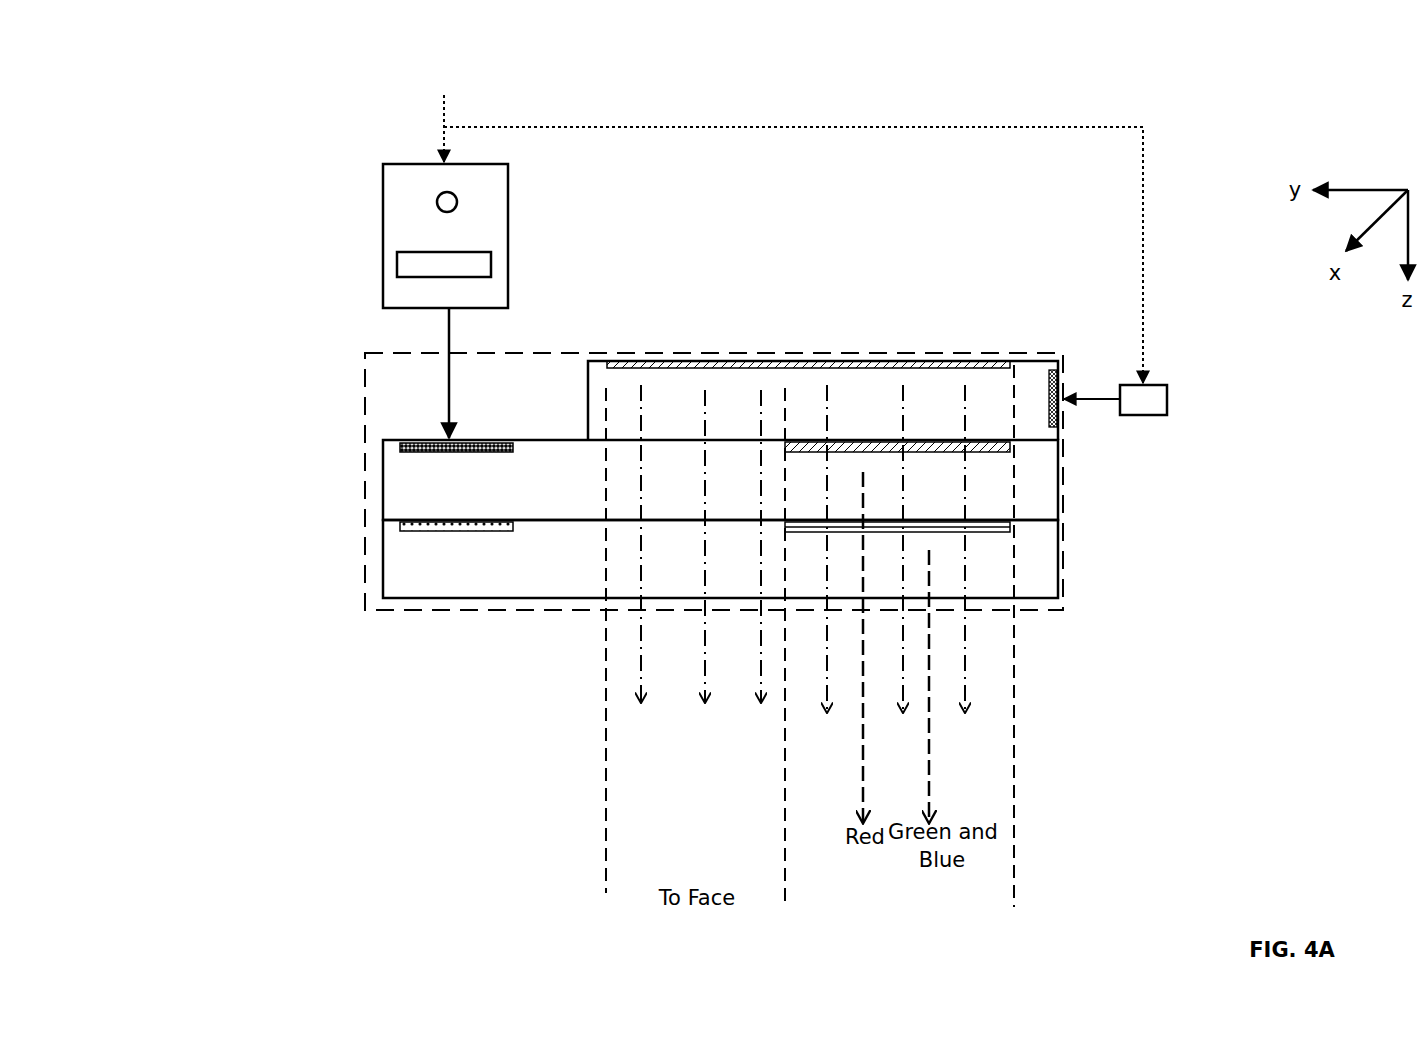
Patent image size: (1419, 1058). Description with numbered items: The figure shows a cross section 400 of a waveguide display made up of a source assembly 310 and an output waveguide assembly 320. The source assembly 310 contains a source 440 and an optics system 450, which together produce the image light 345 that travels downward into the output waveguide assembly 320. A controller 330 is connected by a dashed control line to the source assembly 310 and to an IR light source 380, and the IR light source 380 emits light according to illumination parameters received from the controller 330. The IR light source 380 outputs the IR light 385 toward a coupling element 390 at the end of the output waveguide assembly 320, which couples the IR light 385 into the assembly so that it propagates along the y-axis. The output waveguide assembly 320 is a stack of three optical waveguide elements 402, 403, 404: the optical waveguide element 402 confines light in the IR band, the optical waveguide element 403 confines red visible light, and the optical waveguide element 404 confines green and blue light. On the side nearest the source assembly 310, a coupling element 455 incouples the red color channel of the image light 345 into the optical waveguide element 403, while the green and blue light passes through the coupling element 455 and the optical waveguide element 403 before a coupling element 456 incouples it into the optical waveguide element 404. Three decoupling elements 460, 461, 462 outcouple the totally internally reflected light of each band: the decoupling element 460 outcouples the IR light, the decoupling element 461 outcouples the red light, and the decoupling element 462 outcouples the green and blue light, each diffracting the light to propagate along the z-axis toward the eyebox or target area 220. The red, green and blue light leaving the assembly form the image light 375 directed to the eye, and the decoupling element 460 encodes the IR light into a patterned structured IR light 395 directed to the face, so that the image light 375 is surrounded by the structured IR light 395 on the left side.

The cross section 400 is at (183, 113).
The source assembly 310 is at (383, 172).
The controller 330 is at (770, 212).
The source 440 is at (457, 202).
The optics system 450 is at (491, 262).
The image light 345 is at (449, 342).
The output waveguide assembly 320 is at (365, 354).
The optical waveguide element 402 is at (588, 380).
The optical waveguide element 403 is at (383, 486).
The optical waveguide element 404 is at (383, 578).
The coupling element 455 is at (498, 450).
The coupling element 456 is at (427, 531).
The decoupling element 460 is at (907, 364).
The decoupling element 461 is at (960, 441).
The decoupling element 462 is at (802, 522).
The coupling element 390 is at (1049, 372).
The IR light 385 is at (1087, 400).
The IR light source 380 is at (1167, 399).
The image light 375 is at (863, 765).
The structured IR light 395 is at (1014, 690).
The target area 220 is at (848, 926).